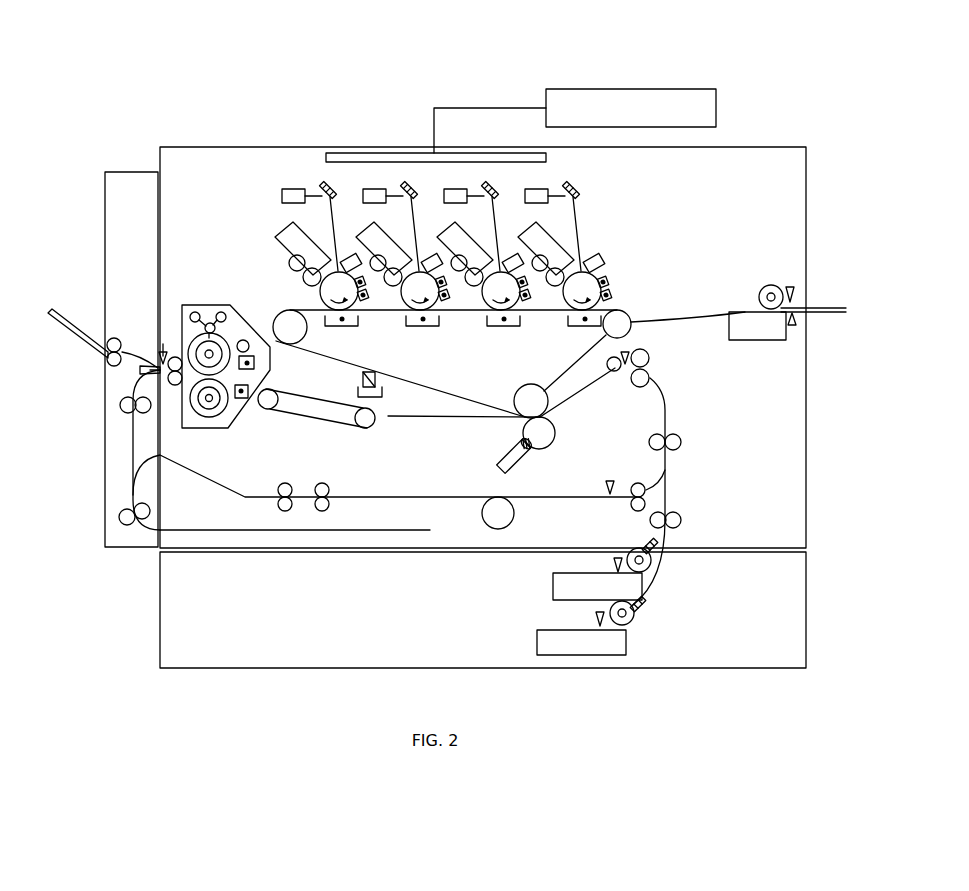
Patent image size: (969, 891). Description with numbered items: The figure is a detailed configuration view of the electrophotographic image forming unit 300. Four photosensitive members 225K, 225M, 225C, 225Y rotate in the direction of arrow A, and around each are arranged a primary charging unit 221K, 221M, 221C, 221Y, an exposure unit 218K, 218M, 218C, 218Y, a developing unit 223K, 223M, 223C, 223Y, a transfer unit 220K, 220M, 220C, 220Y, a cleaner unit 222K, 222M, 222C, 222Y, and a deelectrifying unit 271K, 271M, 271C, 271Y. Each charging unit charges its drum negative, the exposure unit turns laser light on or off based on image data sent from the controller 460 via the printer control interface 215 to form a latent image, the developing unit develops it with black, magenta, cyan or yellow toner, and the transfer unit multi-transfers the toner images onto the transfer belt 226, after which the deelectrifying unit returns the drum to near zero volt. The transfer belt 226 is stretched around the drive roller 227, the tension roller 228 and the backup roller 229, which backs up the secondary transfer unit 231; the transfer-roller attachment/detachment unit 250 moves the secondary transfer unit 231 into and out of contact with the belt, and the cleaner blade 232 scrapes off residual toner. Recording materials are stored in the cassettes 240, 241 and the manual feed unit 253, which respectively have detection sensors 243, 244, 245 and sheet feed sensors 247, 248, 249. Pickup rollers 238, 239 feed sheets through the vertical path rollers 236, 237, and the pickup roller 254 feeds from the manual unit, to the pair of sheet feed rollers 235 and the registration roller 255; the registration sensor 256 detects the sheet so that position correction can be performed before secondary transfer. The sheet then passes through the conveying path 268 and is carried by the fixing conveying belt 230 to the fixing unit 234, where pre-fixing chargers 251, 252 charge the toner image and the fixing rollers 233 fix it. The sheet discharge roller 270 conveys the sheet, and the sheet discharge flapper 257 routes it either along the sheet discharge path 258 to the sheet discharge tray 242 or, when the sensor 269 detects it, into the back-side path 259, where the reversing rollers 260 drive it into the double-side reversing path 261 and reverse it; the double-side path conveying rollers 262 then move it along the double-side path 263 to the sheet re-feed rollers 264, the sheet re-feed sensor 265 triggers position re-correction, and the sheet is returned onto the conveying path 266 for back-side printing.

The image forming unit 300 is at (748, 68).
The controller 460 is at (640, 89).
The printer control interface (I/F) 215 is at (392, 152).
The exposure unit 218K is at (296, 189).
The exposure unit 218M is at (374, 189).
The exposure unit 218C is at (460, 189).
The exposure unit 218Y is at (540, 188).
The transfer unit 220K is at (356, 322).
The transfer unit 220M is at (410, 322).
The transfer unit 220C is at (538, 326).
The transfer unit 220Y is at (608, 308).
The primary charging unit 221K is at (298, 255).
The primary charging unit 221M is at (418, 268).
The primary charging unit 221C is at (497, 268).
The primary charging unit 221Y is at (587, 268).
The cleaner unit 222K is at (340, 326).
The cleaner unit 222M is at (428, 326).
The cleaner unit 222C is at (515, 327).
The cleaner unit 222Y is at (605, 300).
The developing unit 223K is at (278, 237).
The developing unit 223M is at (358, 234).
The developing unit 223C is at (440, 234).
The developing unit 223Y is at (521, 234).
The photosensitive member 225K is at (318, 292).
The photosensitive member 225M is at (433, 313).
The photosensitive member 225C is at (500, 327).
The photosensitive member 225Y is at (600, 273).
The deelectrifying unit 271K is at (361, 296).
The deelectrifying unit 271M is at (446, 300).
The deelectrifying unit 271C is at (527, 300).
The deelectrifying unit 271Y is at (608, 288).
The transfer belt 226 is at (392, 378).
The drive roller 227 is at (282, 322).
The tension roller 228 is at (632, 325).
The backup roller 229 is at (541, 402).
The fixing conveying belt 230 is at (310, 422).
The secondary transfer unit 231 is at (553, 436).
The cleaner blade 232 is at (358, 392).
The fixing rollers 233 is at (213, 410).
The fixing unit 234 is at (203, 303).
The pair of sheet feed rollers 235 is at (650, 376).
The pair of vertical path rollers 236 is at (675, 448).
The pair of vertical path rollers 237 is at (676, 526).
The pickup roller 238 is at (652, 562).
The pickup roller 239 is at (635, 620).
The cassette 240 is at (551, 585).
The cassette 241 is at (537, 640).
The sheet discharge tray 242 is at (70, 322).
The detection sensor 243 is at (614, 564).
The detection sensor 244 is at (596, 618).
The detection sensor 245 is at (792, 328).
The sheet feed sensor 247 is at (644, 542).
The sheet feed sensor 248 is at (645, 604).
The sheet feed sensor 249 is at (790, 286).
The transfer-roller attachment/detachment unit 250 is at (500, 470).
The pre-fixing charger 251 is at (254, 362).
The pre-fixing charger 252 is at (243, 400).
The manual feed unit 253 is at (816, 314).
The pickup roller 254 is at (760, 296).
The registration roller 255 is at (613, 372).
The registration sensor 256 is at (644, 354).
The sheet discharge flapper 257 is at (138, 372).
The sheet discharge path 258 is at (150, 363).
The back-side path 259 is at (125, 415).
The reversing rollers 260 is at (118, 515).
The double-side reversing path 261 is at (273, 532).
The double-side path conveying rollers 262 is at (300, 510).
The double-side path 263 is at (433, 499).
The sheet re-feed rollers 264 is at (631, 504).
The sheet re-feed sensor 265 is at (606, 487).
The conveying path 266 is at (666, 408).
The conveying path 268 is at (422, 418).
The sensor 269 is at (165, 350).
The sheet discharge roller 270 is at (108, 362).